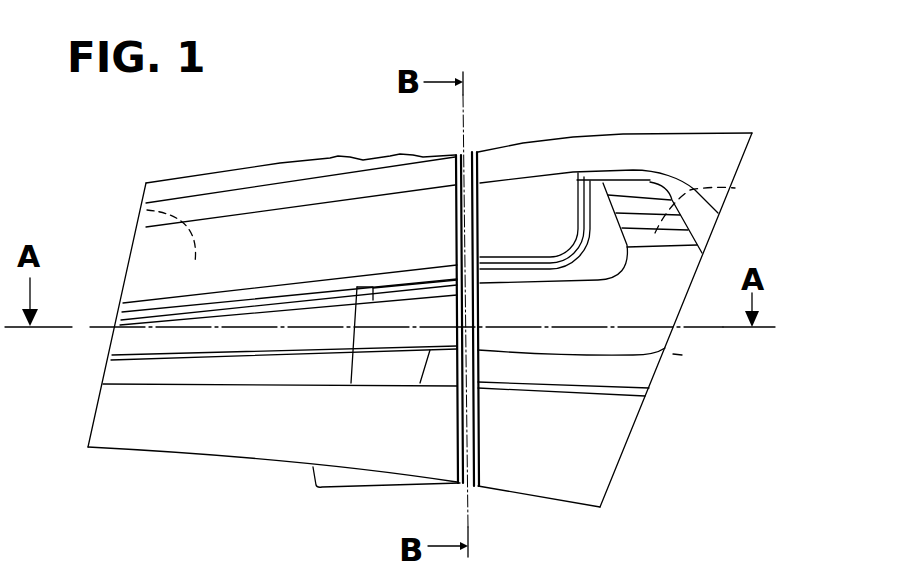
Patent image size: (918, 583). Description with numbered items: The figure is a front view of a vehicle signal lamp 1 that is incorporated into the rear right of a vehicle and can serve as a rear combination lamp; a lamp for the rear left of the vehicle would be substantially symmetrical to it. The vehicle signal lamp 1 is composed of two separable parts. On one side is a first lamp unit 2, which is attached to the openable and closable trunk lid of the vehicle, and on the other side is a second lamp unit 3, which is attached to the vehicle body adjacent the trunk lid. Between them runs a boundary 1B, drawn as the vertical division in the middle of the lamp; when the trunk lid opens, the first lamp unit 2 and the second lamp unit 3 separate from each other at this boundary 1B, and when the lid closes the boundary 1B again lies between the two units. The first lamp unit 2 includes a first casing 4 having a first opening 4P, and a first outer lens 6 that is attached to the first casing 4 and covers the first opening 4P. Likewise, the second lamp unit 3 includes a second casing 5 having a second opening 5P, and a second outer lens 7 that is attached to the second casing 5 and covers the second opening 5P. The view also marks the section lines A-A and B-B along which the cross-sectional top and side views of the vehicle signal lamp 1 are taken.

The vehicle signal lamp 1 is at (607, 118).
The boundary 1B is at (472, 440).
The first lamp unit 2 is at (230, 367).
The second lamp unit 3 is at (632, 338).
The first casing 4 is at (128, 268).
The first opening 4P is at (147, 210).
The second casing 5 is at (703, 255).
The second opening 5P is at (735, 188).
The first outer lens 6 is at (268, 445).
The second outer lens 7 is at (598, 463).